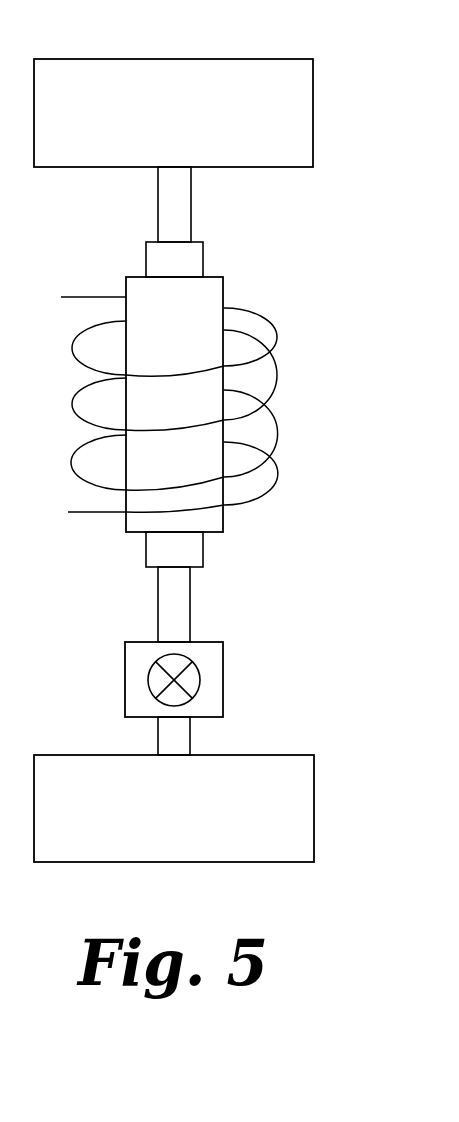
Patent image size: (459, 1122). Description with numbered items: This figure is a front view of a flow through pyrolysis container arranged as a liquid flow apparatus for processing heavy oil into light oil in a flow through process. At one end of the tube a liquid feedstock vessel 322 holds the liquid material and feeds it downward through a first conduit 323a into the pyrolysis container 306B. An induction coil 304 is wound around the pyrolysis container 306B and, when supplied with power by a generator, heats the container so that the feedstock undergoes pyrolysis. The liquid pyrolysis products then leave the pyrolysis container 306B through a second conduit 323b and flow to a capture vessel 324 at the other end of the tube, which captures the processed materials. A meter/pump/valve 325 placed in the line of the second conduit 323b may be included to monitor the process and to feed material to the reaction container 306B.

The liquid feedstock vessel 322 is at (313, 118).
The first conduit 323a is at (191, 190).
The pyrolysis container 306B is at (207, 295).
The induction coil 304 is at (260, 313).
The second conduit 323b is at (191, 604).
The meter/pump/valve 325 is at (223, 688).
The capture vessel 324 is at (314, 817).